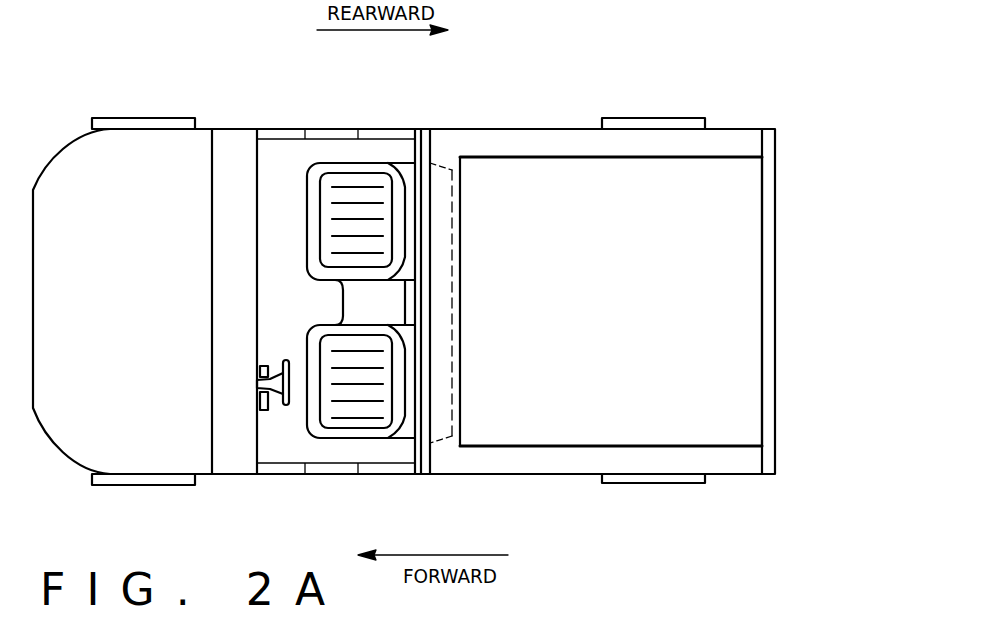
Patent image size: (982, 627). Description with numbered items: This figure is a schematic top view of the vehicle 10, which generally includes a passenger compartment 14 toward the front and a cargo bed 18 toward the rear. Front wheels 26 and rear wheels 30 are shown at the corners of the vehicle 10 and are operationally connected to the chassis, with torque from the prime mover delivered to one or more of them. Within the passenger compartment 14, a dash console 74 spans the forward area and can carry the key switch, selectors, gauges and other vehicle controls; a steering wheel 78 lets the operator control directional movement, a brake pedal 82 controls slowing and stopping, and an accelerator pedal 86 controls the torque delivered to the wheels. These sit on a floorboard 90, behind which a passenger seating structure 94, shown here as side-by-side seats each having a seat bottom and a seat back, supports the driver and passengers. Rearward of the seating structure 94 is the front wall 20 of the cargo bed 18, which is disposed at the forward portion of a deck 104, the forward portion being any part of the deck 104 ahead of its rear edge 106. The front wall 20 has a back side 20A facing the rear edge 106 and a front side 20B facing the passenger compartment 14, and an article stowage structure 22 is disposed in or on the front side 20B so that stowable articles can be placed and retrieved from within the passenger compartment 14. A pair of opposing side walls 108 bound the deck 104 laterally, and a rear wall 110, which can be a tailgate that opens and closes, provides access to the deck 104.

The vehicle 10 is at (685, 47).
The passenger compartment 14 is at (299, 113).
The cargo bed 18 is at (559, 113).
The front wall 20 is at (445, 153).
The back side of front wall 20A is at (462, 219).
The front side of front wall 20B is at (430, 275).
The article stowage structure 22 is at (460, 308).
The front wheels 26 is at (140, 122).
The rear wheels 30 is at (655, 118).
The dash console 74 is at (242, 140).
The steering wheel 78 is at (282, 360).
The brake pedal 82 is at (258, 402).
The accelerator pedal 86 is at (258, 372).
The floorboard 90 is at (293, 255).
The passenger seating structure 94 is at (400, 187).
The deck 104 is at (632, 333).
The rear edge of deck 106 is at (760, 255).
The side walls 108 is at (735, 145).
The rear wall 110 is at (775, 267).